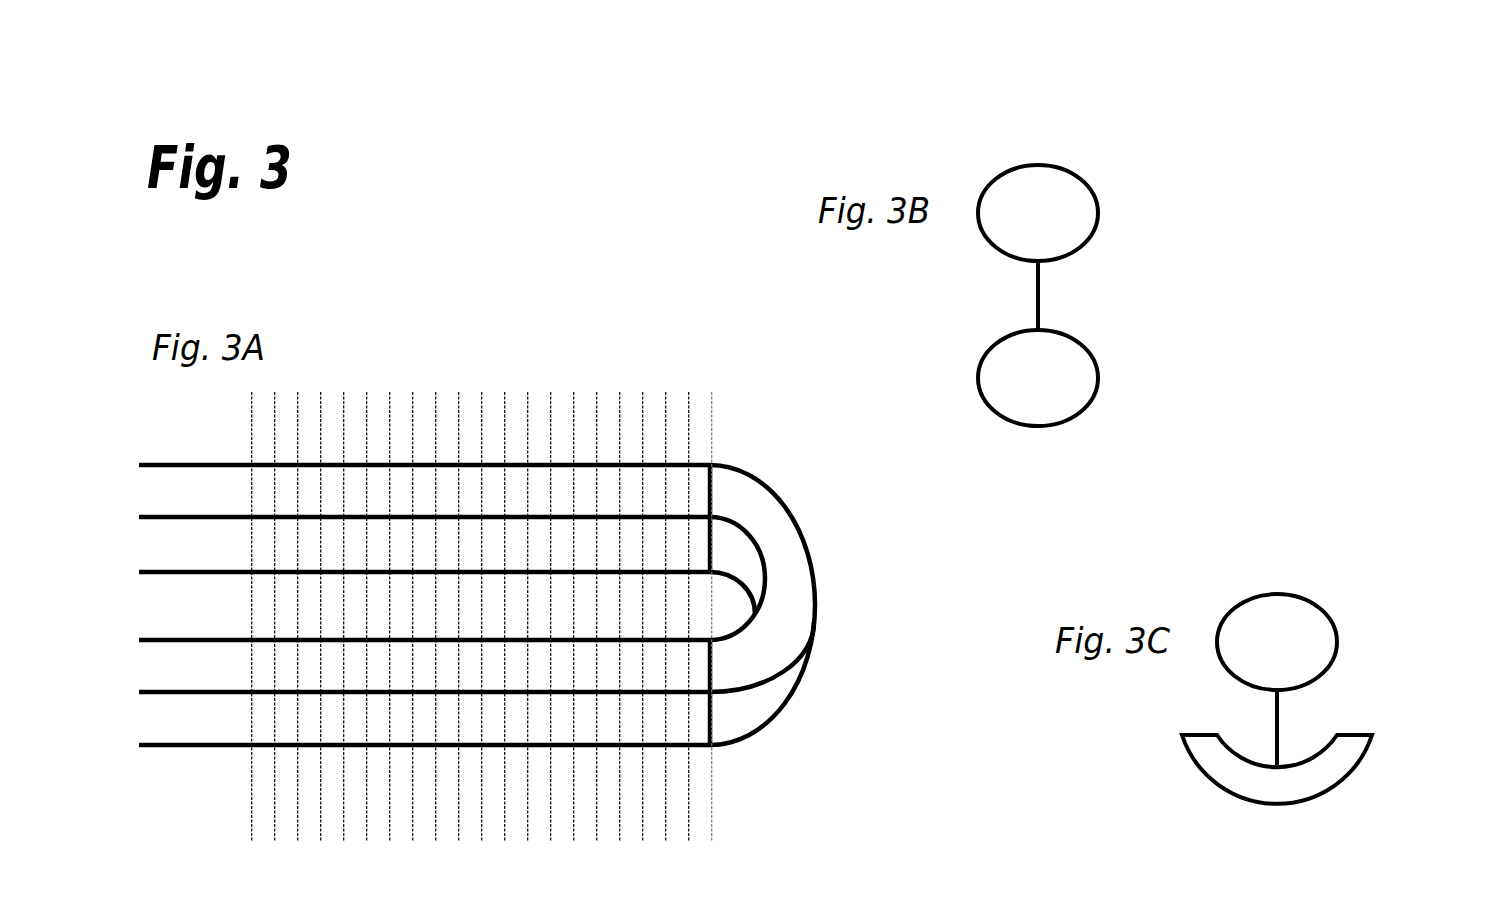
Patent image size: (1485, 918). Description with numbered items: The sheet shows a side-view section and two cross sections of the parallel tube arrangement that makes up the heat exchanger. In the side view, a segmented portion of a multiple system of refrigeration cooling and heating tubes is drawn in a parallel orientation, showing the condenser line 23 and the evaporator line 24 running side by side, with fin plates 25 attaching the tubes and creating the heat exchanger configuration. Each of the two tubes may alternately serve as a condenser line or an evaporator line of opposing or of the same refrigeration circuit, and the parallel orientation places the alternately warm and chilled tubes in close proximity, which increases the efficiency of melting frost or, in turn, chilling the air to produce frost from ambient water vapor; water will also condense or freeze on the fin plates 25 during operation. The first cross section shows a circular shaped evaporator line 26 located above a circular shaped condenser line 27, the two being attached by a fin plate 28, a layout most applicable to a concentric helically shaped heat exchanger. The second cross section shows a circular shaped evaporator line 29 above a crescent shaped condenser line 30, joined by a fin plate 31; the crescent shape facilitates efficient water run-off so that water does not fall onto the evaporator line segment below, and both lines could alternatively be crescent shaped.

In FIG. 3A, the condenser line 23 is at (827, 553).
In FIG. 3A, the evaporator line 24 is at (827, 665).
In FIG. 3A, the fin plates 25 is at (435, 377).
In FIG. 3B, the circular shaped evaporator line 26 is at (1112, 207).
In FIG. 3B, the circular shaped condenser line 27 is at (1100, 400).
In FIG. 3B, the fin plate 28 is at (1023, 298).
In FIG. 3C, the circular shaped evaporator line 29 is at (1308, 590).
In FIG. 3C, the crescent shaped condenser line 30 is at (1170, 762).
In FIG. 3C, the fin plate 31 is at (1293, 717).